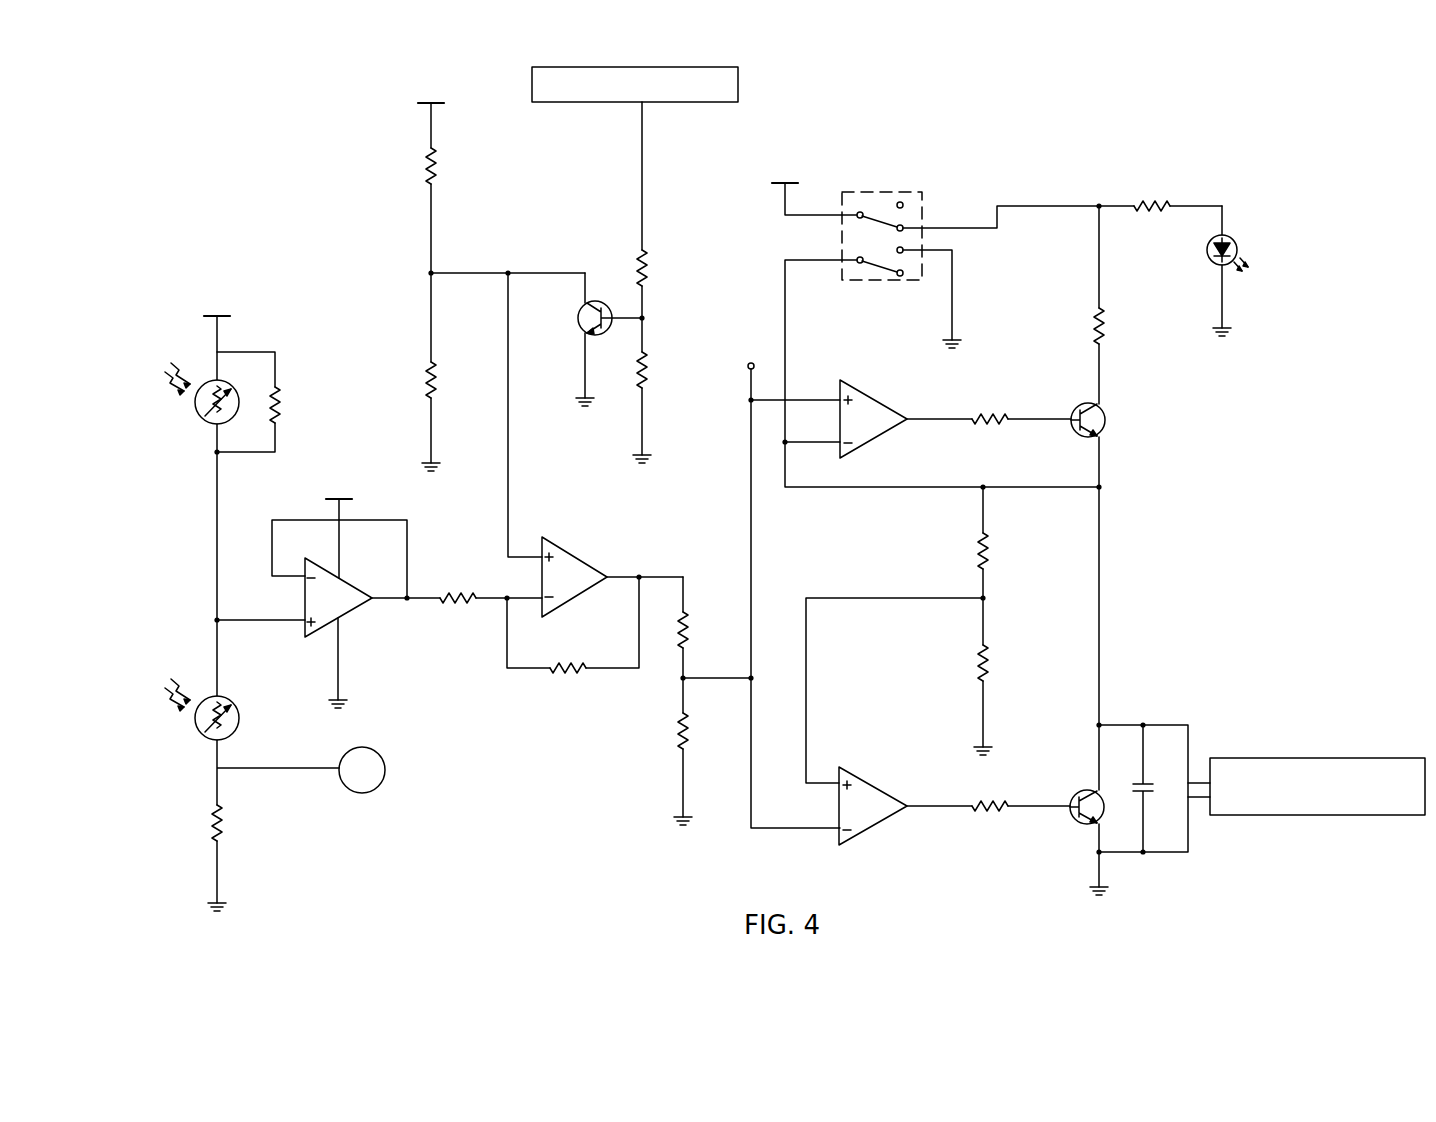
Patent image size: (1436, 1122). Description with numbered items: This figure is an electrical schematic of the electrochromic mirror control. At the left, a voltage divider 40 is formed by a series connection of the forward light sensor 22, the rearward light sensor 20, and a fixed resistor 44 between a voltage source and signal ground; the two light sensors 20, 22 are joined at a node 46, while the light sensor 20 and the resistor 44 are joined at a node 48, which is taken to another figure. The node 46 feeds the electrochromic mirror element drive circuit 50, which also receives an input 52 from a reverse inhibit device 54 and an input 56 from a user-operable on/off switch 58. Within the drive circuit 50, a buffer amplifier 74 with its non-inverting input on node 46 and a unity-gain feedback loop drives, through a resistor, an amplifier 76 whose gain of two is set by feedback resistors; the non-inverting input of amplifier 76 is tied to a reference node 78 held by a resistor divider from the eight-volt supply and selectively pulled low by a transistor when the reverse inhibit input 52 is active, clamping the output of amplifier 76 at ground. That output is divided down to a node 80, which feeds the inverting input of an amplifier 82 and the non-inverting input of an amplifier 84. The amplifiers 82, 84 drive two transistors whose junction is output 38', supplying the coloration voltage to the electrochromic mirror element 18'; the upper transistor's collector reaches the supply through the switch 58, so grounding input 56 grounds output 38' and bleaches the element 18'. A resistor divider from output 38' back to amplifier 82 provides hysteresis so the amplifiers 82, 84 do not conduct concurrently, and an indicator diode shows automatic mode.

The electrochromic mirror element 18' is at (1306, 762).
The rearward light sensor 20 is at (239, 720).
The forward light sensor 22 is at (226, 383).
The output 38' is at (1138, 581).
The voltage divider 40 is at (212, 577).
The fixed resistor 44 is at (222, 820).
The node 46 is at (217, 650).
The node 48 is at (262, 770).
The electrochromic mirror element drive circuit 50 is at (717, 514).
The input 52 is at (642, 185).
The reverse inhibit device 54 is at (740, 83).
The input 56 is at (785, 327).
The on/off switch 58 is at (1017, 246).
The buffer amplifier 74 is at (350, 608).
The amplifier 76 is at (573, 557).
The reference node 78 is at (462, 272).
The node 80 is at (751, 563).
The amplifier 82 is at (867, 785).
The amplifier 84 is at (867, 395).